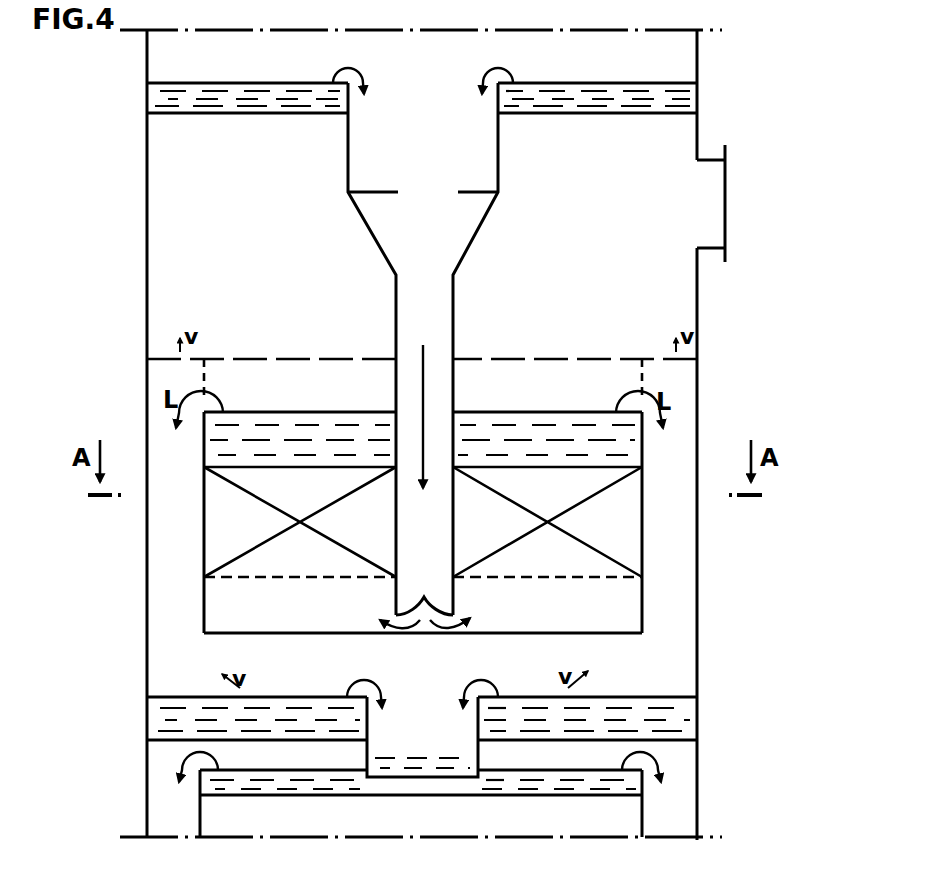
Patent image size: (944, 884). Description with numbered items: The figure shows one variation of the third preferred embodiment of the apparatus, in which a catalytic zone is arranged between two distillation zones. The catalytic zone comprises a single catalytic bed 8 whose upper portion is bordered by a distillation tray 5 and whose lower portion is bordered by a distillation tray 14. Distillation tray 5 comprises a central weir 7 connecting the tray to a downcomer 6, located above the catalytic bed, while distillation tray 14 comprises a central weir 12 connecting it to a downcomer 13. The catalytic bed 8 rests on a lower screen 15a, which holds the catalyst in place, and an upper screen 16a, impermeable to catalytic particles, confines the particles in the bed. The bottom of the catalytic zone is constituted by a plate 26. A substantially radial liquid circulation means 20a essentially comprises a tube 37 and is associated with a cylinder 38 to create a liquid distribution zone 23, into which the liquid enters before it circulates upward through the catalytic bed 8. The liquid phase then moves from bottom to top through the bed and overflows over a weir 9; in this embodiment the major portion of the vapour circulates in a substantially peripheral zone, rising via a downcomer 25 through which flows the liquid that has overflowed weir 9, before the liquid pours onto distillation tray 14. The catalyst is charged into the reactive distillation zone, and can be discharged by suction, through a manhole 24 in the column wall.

The distillation tray 5 is at (228, 113).
The downcomer 6 is at (448, 150).
The central weir 7 is at (350, 116).
The manhole 24 is at (715, 200).
The weir 9 is at (215, 445).
The upper screen 16a is at (338, 467).
The downcomer 25 is at (682, 402).
The catalytic bed 8 is at (423, 522).
The lower screen 15a is at (242, 578).
The plate 26 is at (223, 634).
The tube 37 is at (396, 598).
The liquid distribution zone 23 is at (628, 588).
The cylinder 38 is at (643, 606).
The substantially radial liquid circulation means 20a is at (606, 640).
The distillation tray 14 is at (653, 734).
The central weir 12 is at (373, 724).
The downcomer 13 is at (442, 743).